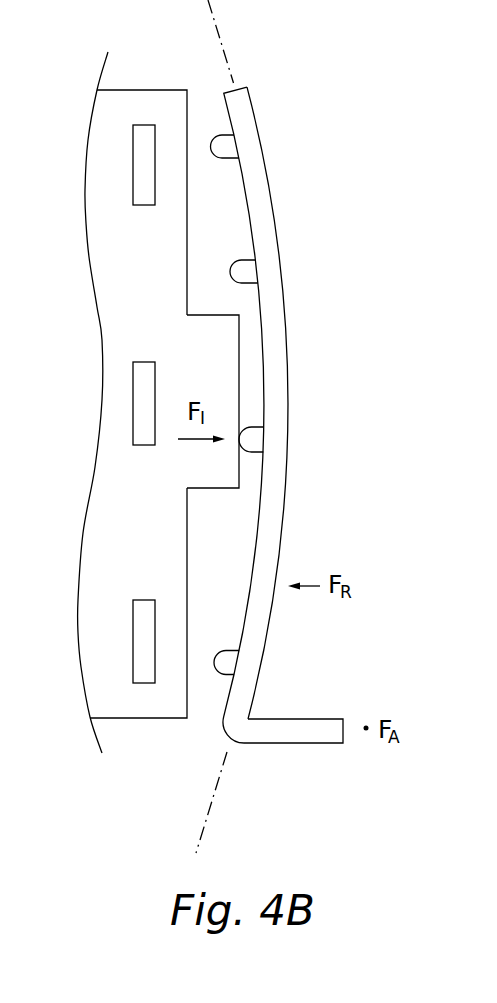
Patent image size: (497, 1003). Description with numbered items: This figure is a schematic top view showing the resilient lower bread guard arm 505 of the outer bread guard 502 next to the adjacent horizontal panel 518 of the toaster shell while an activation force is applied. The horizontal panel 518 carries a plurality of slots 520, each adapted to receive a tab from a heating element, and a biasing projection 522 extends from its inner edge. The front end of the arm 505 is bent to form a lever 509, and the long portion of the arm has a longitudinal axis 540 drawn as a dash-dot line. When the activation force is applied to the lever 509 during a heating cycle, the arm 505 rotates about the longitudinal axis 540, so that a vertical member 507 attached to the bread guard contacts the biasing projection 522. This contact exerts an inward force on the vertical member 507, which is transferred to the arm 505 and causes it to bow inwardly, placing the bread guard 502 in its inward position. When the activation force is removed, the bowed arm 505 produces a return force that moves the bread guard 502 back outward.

The outer bread guard 502 is at (225, 426).
The resilient lower bread guard arm 505 is at (258, 210).
The vertical member 507 is at (253, 441).
The lever 509 is at (303, 737).
The horizontal panel 518 is at (148, 106).
The slot 520 is at (155, 183).
The biasing projection 522 is at (205, 473).
The longitudinal axis 540 is at (223, 50).